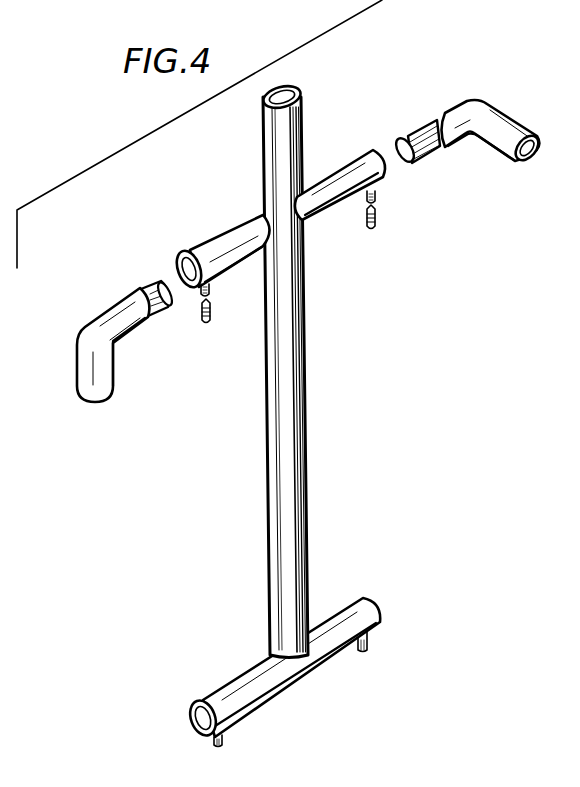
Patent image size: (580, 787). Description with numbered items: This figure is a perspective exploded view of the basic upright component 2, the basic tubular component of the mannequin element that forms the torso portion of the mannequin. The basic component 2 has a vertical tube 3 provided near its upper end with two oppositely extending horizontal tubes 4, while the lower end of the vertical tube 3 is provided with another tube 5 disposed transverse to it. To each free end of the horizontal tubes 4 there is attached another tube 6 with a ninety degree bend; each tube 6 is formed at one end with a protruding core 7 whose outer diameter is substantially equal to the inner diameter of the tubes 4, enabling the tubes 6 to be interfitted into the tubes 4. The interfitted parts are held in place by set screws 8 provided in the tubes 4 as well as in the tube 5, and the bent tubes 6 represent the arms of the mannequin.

The basic upright component 2 is at (258, 477).
The vertical tube 3 is at (288, 357).
The horizontal tubes 4 is at (225, 237).
The tube 5 is at (248, 683).
The tube with 90° bend 6 is at (85, 340).
The protruding core 7 is at (160, 290).
The set screws 8 is at (204, 328).